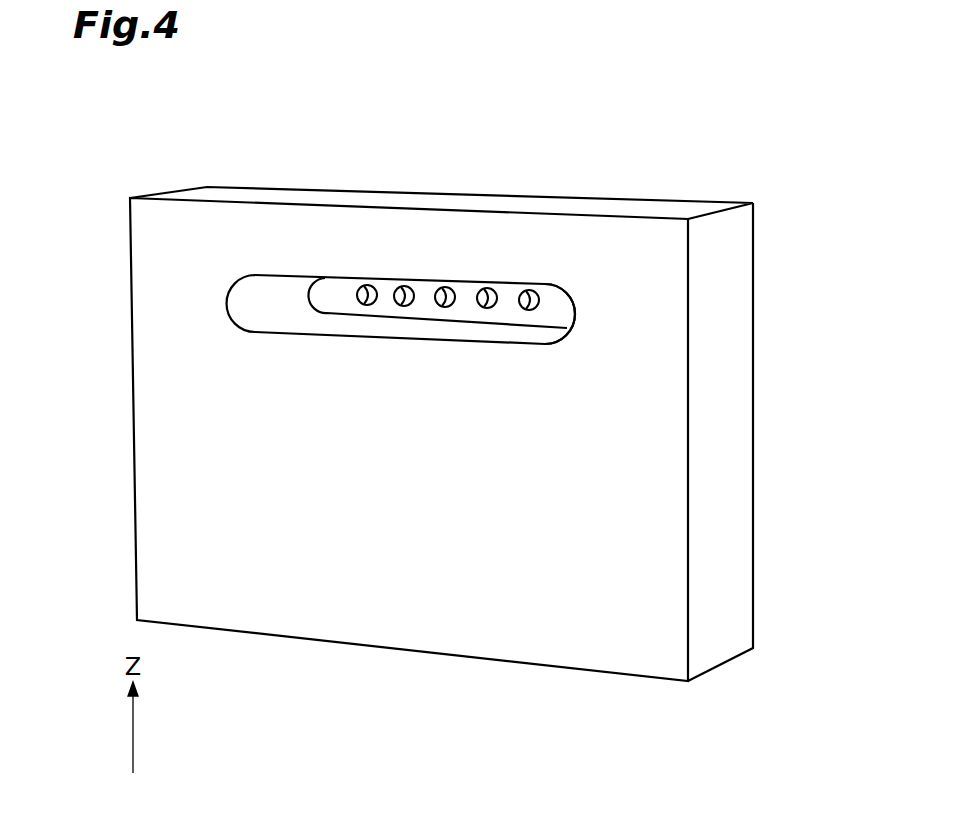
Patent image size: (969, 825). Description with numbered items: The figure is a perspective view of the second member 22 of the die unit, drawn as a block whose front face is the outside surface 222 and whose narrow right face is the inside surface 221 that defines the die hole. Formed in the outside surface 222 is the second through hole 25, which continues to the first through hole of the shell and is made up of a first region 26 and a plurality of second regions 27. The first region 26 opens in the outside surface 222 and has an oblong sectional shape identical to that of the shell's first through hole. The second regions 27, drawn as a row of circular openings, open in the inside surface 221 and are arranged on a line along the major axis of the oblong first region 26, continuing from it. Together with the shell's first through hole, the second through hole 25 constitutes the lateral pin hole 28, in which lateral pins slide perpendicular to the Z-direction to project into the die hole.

The second member 22 is at (446, 434).
The inside surface 221 is at (643, 390).
The outside surface 222 is at (212, 450).
The second through hole 25 is at (431, 214).
The first region 26 is at (251, 275).
The second regions 27 is at (363, 285).
The lateral pin hole 28 is at (589, 234).